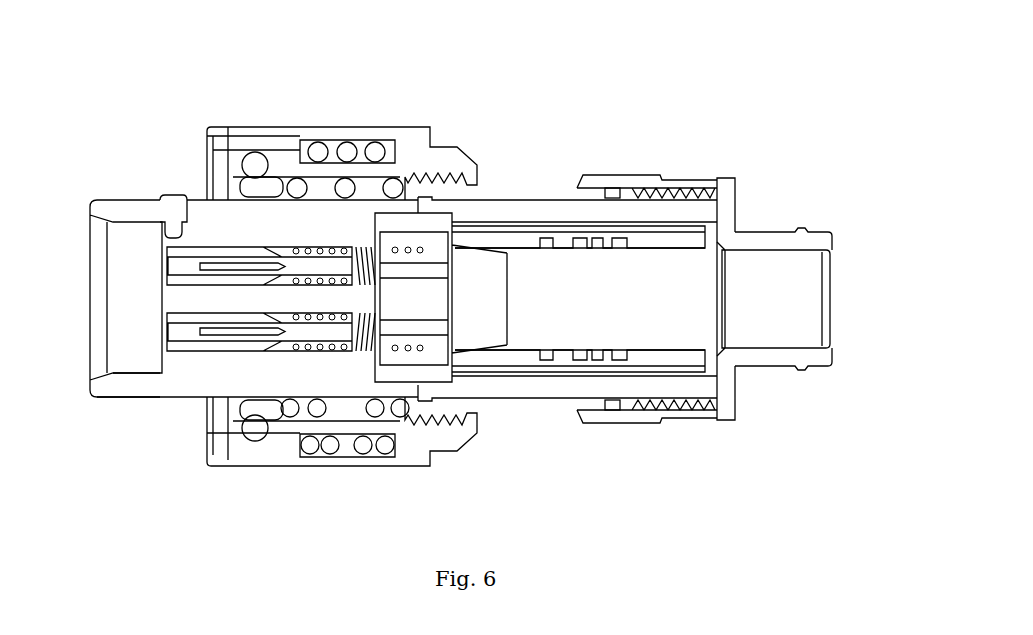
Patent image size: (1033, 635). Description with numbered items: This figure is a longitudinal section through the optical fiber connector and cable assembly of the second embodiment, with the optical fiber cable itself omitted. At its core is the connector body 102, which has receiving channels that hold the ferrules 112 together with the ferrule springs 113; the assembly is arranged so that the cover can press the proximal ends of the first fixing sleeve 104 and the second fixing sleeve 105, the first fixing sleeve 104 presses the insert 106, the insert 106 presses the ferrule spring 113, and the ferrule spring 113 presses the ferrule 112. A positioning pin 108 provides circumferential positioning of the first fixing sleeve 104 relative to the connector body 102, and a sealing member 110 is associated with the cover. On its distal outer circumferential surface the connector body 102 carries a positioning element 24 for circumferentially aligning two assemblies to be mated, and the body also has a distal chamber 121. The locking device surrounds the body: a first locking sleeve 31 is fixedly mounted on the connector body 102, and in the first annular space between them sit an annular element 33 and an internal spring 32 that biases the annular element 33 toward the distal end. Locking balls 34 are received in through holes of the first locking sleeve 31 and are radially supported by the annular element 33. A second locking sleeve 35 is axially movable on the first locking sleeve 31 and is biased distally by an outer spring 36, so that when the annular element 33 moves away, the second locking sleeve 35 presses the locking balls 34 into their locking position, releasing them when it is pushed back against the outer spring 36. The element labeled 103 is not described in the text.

The connector body 102 is at (122, 215).
The distal chamber 121 is at (133, 357).
The positioning element 24 is at (170, 210).
The ferrule 112 is at (253, 267).
The ferrule spring 113 is at (357, 250).
The first locking sleeve 31 is at (419, 165).
The internal spring 32 is at (389, 187).
The annular element 33 is at (276, 180).
The locking balls 34 is at (252, 427).
The second locking sleeve 35 is at (280, 450).
The outer spring 36 is at (363, 445).
The insert 106 is at (445, 242).
The positioning pin 108 is at (497, 210).
The first fixing sleeve 104 is at (527, 240).
The second fixing sleeve 105 is at (673, 242).
The sealing member 110 is at (615, 193).
The hose nipple 103 is at (760, 240).